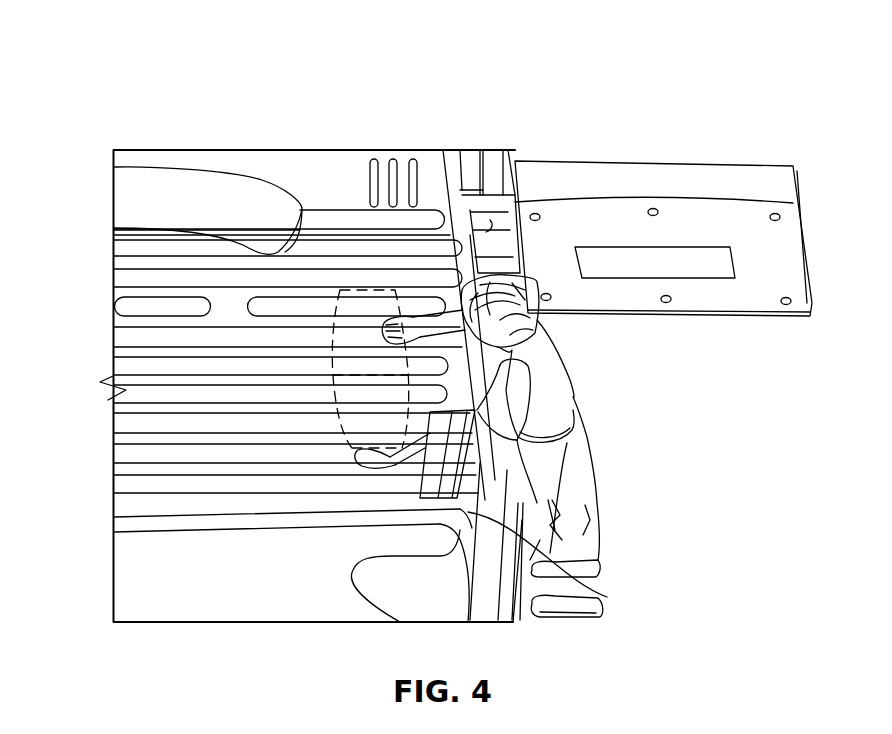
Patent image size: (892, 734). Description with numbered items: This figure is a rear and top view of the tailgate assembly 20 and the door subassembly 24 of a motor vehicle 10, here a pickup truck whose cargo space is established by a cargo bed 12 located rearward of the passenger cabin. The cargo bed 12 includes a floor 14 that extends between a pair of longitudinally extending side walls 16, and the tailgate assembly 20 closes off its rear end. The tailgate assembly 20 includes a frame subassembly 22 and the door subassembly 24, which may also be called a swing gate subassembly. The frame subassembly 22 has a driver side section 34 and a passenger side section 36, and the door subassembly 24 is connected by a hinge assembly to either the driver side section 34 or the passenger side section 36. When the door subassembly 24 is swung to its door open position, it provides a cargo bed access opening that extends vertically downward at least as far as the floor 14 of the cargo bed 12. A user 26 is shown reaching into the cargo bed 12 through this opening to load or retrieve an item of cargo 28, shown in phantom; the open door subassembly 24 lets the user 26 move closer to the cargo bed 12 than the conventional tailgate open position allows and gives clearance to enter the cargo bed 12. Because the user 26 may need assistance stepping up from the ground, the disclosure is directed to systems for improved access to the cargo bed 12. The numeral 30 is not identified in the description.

The motor vehicle 10 is at (130, 88).
The cargo bed 12 is at (318, 254).
The floor 14 is at (128, 425).
The side walls 16 is at (363, 148).
The tailgate assembly 20 is at (497, 151).
The frame subassembly 22 is at (485, 163).
The door subassembly 24 is at (730, 172).
The user 26 is at (583, 412).
The item of cargo 28 is at (380, 307).
The latch striker 30 is at (485, 262).
The driver side section 34 is at (607, 597).
The passenger side section 36 is at (497, 183).